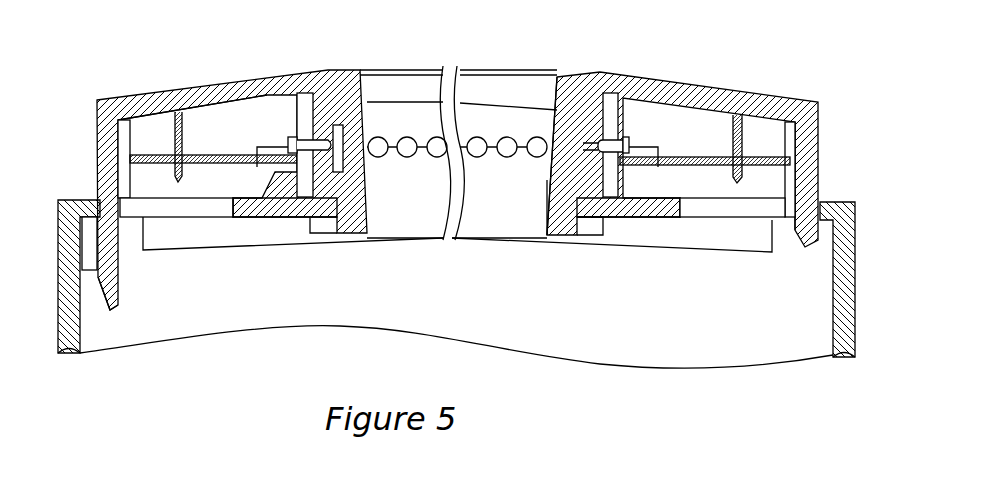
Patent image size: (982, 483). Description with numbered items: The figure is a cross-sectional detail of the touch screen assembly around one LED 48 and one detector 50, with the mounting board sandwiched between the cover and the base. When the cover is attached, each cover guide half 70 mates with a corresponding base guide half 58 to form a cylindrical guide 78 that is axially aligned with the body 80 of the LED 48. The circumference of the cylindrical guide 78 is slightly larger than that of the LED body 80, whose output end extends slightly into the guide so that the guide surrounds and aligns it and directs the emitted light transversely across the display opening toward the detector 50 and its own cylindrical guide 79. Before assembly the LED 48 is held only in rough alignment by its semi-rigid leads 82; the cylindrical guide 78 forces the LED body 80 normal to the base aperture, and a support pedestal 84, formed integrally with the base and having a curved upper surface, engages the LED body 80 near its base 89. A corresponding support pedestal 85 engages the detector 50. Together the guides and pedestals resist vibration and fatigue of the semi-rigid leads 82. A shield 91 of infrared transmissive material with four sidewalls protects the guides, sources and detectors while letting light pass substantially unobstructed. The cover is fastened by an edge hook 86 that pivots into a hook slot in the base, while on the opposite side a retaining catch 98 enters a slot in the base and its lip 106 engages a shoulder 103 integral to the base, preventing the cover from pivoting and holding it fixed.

The LED 48 is at (610, 95).
The detector 50 is at (262, 90).
The base guide half 58 is at (548, 184).
The cover guide half 70 is at (605, 88).
The cylindrical guide 78 is at (586, 135).
The cylindrical guide 79 is at (348, 72).
The LED body 80 is at (605, 222).
The semi-rigid leads 82 is at (658, 143).
The support pedestal 84 is at (635, 218).
The support pedestal 85 is at (245, 199).
The edge hook 86 is at (819, 172).
The base of LED body 89 is at (626, 138).
The shield 91 is at (363, 125).
The retaining catch 98 is at (97, 131).
The shoulder 103 is at (97, 199).
The lip 106 is at (105, 311).